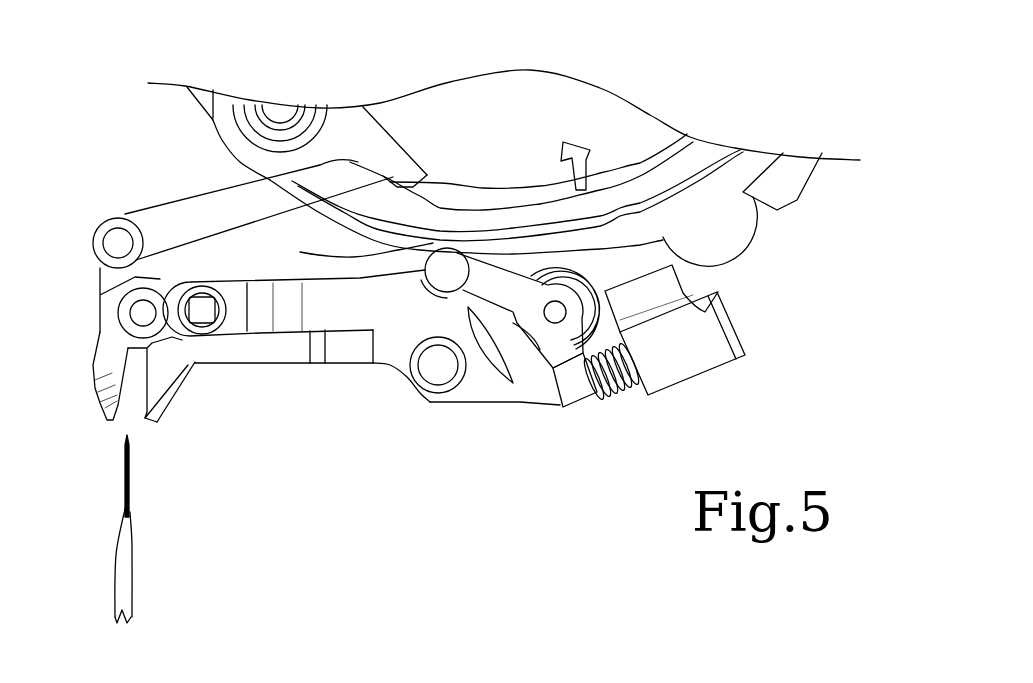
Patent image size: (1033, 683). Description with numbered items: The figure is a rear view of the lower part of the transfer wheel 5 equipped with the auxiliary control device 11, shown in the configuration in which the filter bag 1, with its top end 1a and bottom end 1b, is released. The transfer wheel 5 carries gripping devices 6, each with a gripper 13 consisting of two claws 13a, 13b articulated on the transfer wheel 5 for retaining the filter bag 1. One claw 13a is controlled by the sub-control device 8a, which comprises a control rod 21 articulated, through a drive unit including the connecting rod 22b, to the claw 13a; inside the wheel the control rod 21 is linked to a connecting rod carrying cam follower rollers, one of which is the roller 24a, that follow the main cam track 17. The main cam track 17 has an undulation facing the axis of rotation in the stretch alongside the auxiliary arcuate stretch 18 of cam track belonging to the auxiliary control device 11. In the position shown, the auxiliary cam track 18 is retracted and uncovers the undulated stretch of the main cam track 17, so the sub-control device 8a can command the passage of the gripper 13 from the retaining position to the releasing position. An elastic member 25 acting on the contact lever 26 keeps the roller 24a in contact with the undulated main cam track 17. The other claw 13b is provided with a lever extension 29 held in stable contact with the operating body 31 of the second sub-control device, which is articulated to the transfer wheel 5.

The filter bag 1 is at (82, 581).
The top end 1a is at (98, 468).
The bottom end 1b is at (131, 645).
The transfer wheel 5 is at (568, 102).
The gripping device 6 is at (423, 423).
The sub-control device 8a is at (580, 440).
The auxiliary control device 11 is at (674, 201).
The gripper 13 is at (167, 436).
The claw 13a is at (105, 352).
The claw 13b is at (163, 380).
The main cam track 17 is at (300, 252).
The auxiliary arcuate stretch of cam track 18 is at (490, 222).
The control rod 21 is at (557, 313).
The connecting rod 22b is at (175, 218).
The cam follower roller 24a is at (447, 272).
The elastic member 25 is at (627, 392).
The contact lever 26 is at (573, 383).
The lever extension 29 is at (287, 352).
The operating body 31 is at (478, 387).